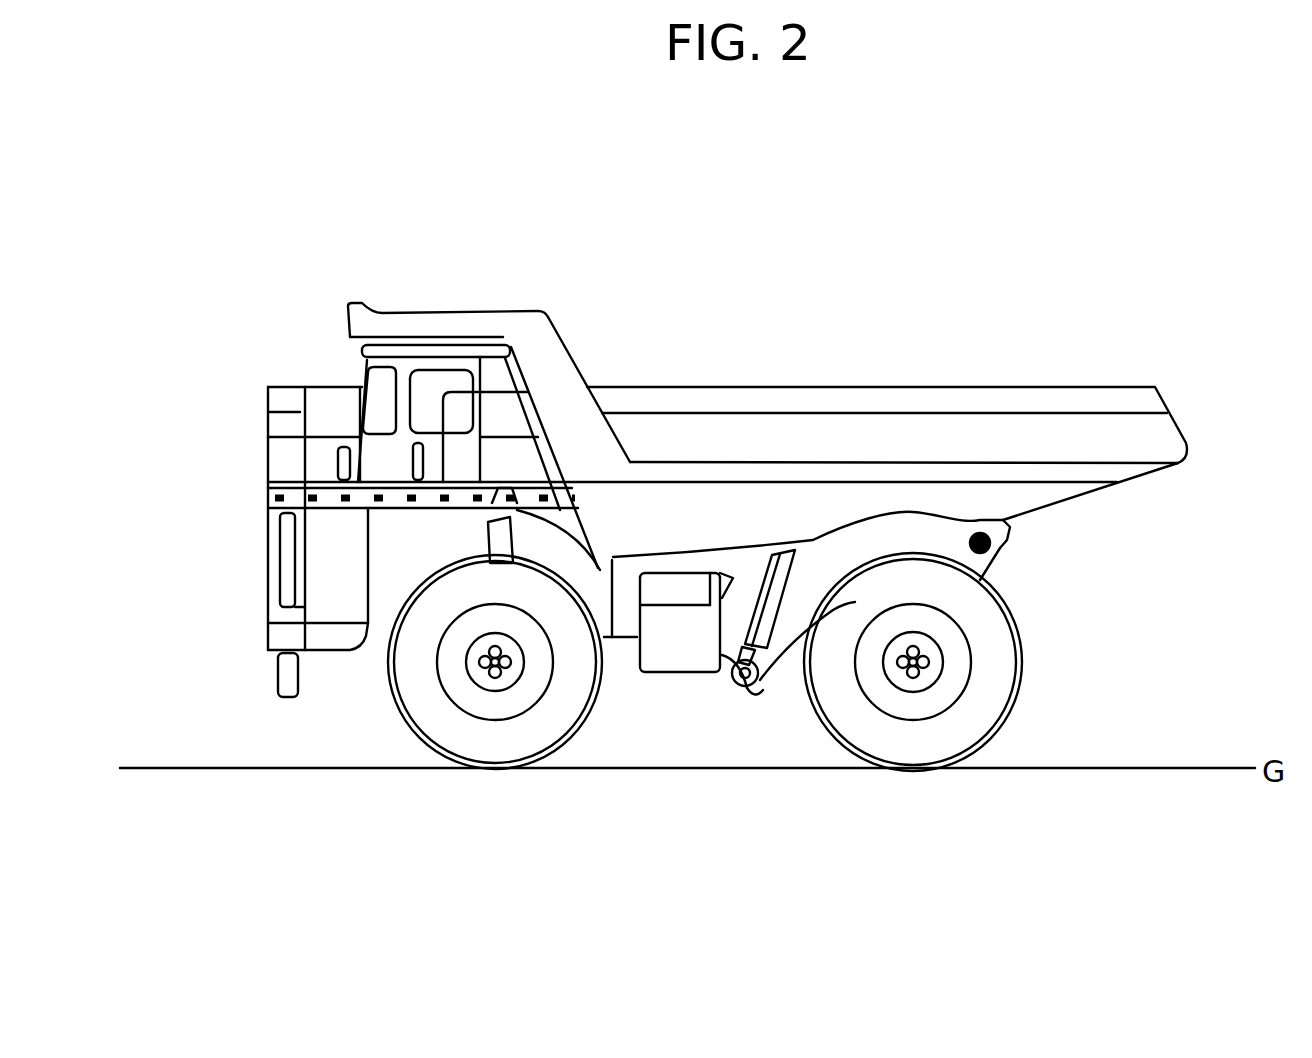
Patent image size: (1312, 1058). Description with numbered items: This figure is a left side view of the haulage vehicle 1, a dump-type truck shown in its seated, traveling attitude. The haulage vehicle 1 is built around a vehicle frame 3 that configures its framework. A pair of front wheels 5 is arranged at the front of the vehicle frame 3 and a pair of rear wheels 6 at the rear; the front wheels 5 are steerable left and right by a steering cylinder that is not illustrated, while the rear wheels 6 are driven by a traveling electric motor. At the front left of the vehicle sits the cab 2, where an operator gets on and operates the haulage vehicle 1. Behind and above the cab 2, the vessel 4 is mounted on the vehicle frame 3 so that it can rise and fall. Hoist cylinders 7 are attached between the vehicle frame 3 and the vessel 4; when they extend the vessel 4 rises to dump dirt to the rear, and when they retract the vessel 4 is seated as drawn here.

The haulage vehicle 1 is at (693, 310).
The cab 2 is at (403, 512).
The vehicle frame 3 is at (627, 637).
The vessel 4 is at (1010, 387).
The front wheels 5 is at (528, 760).
The rear wheels 6 is at (980, 727).
The hoist cylinders 7 is at (757, 697).